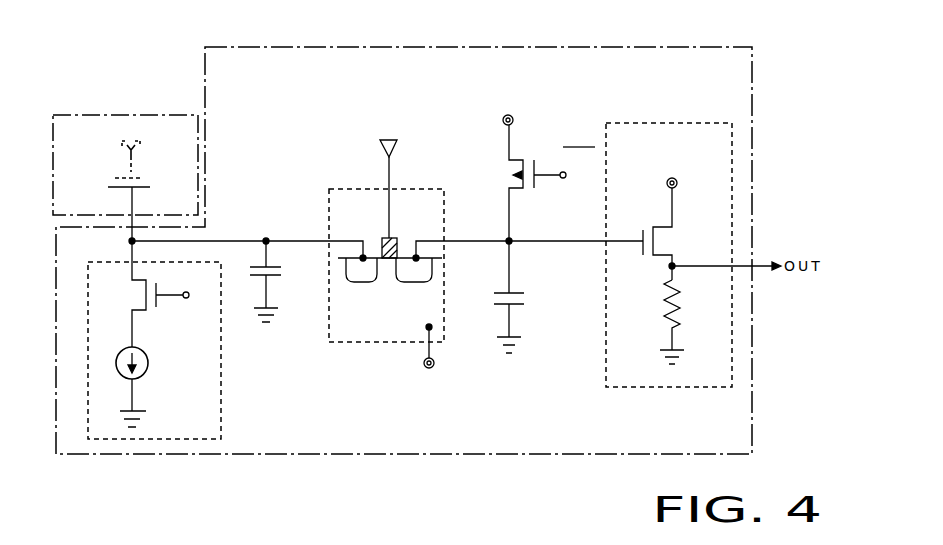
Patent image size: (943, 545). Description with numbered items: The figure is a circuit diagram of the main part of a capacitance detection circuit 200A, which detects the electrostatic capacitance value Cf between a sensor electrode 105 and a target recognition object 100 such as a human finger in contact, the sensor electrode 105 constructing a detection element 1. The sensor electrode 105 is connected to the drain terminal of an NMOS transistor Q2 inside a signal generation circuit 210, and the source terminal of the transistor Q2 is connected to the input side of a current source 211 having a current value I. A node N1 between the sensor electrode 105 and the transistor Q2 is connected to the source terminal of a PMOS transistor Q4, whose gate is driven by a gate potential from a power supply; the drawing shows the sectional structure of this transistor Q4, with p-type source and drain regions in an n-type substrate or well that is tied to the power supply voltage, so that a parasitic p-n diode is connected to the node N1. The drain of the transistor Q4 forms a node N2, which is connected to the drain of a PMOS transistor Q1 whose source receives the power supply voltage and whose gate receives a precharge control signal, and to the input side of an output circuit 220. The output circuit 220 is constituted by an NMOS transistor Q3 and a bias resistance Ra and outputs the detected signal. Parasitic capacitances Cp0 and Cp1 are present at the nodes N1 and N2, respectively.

The detection element 1 is at (133, 113).
The target recognition object 100 is at (137, 179).
The sensor electrode 105 is at (110, 185).
The capacitance detection circuit 200A is at (689, 47).
The signal generation circuit 210 is at (221, 382).
The current source 211 is at (150, 366).
The output circuit 220 is at (679, 119).
The PMOS transistor Q1 is at (534, 167).
The NMOS transistor Q2 is at (156, 294).
The NMOS transistor Q3 is at (671, 217).
The PMOS transistor Q4 is at (352, 343).
The electrostatic capacitance value Cf is at (147, 188).
The parasitic capacitance Cp0 is at (280, 281).
The parasitic capacitance Cp1 is at (523, 297).
The bias resistance Ra is at (687, 322).
The node N1 is at (268, 235).
The node N2 is at (512, 236).